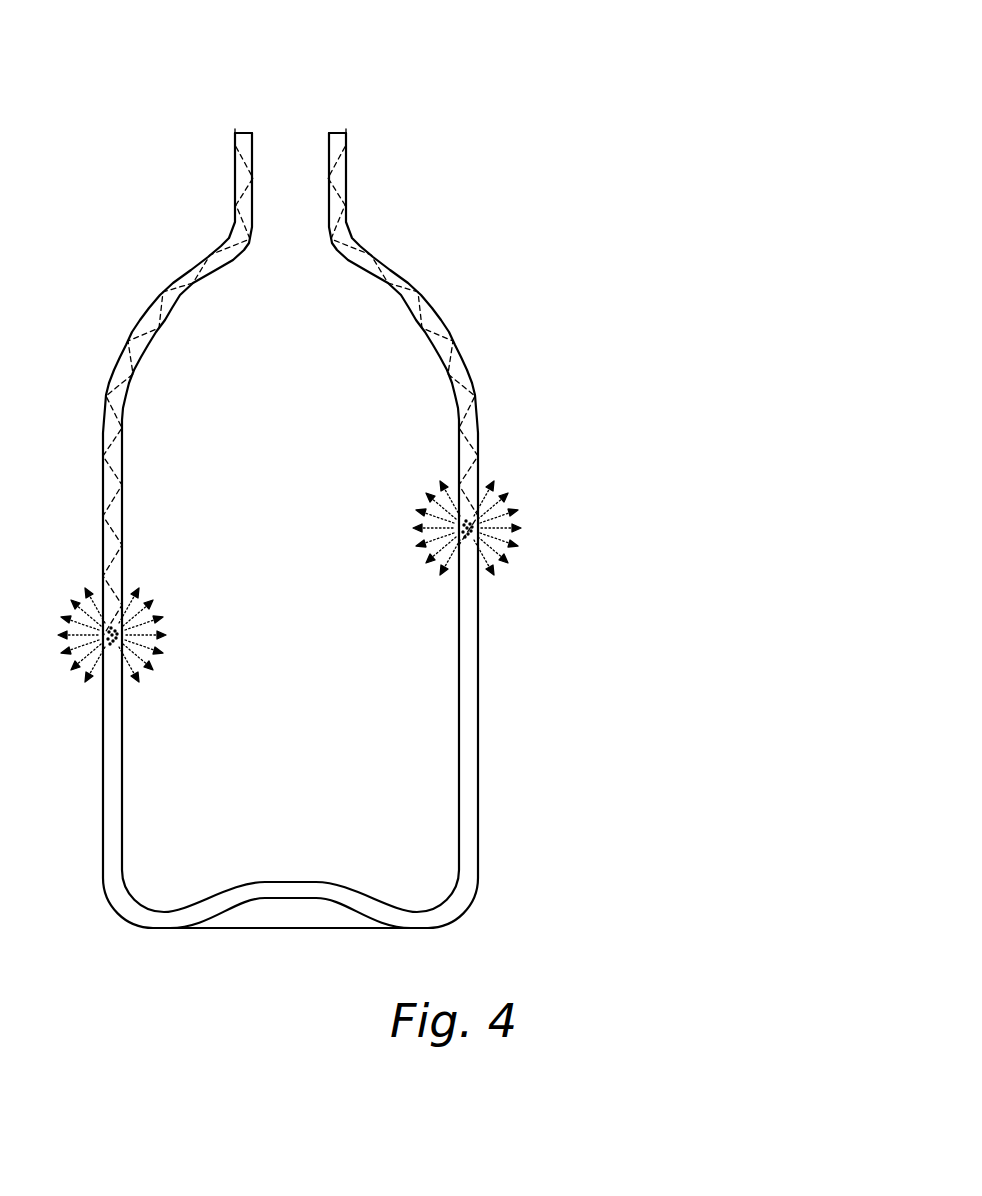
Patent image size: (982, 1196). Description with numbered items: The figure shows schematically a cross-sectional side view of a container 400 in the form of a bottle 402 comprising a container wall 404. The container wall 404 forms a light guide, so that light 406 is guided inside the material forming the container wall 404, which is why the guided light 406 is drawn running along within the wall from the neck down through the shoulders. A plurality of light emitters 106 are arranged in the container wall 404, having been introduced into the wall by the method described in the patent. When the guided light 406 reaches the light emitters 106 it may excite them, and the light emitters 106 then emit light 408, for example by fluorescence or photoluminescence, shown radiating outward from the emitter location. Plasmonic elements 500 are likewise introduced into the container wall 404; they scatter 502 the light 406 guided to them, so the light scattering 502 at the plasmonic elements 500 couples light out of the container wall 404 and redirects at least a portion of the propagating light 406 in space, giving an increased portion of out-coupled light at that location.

The container 400 is at (516, 74).
The bottle 402 is at (540, 218).
The container wall 404 is at (472, 762).
The light 406 is at (202, 274).
The emitted light 408 is at (155, 628).
The light emitter 106 is at (113, 645).
The plasmonic element 500 is at (475, 528).
The light scattering 502 is at (500, 503).